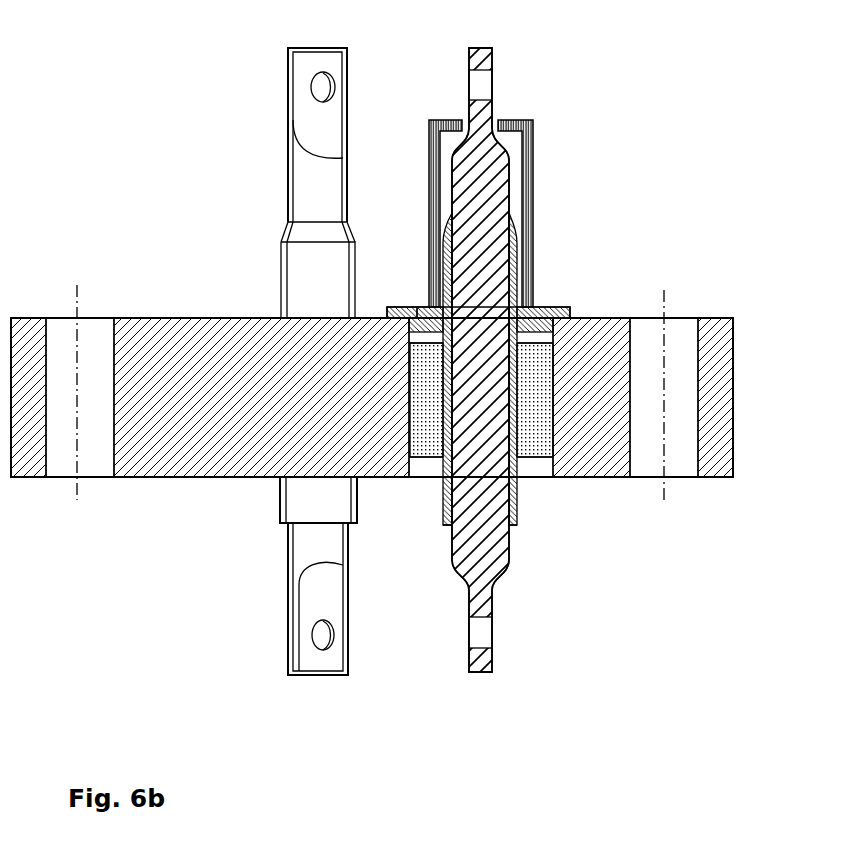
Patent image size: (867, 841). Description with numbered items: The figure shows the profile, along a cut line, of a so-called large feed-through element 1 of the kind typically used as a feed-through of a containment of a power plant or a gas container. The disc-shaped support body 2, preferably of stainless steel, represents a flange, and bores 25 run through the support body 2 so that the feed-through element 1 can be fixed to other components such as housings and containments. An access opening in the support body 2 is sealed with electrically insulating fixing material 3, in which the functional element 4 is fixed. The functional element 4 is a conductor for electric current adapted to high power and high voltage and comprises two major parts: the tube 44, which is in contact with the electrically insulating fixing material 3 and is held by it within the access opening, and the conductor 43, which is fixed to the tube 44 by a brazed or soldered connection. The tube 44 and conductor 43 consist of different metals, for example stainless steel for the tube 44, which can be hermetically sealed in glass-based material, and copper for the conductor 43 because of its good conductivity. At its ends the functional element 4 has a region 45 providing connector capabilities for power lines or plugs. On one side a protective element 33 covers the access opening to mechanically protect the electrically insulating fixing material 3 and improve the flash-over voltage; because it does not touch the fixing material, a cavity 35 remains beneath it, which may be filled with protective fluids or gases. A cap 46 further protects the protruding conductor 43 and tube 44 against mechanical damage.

The feed-through element 1 is at (157, 280).
The support body 2 is at (170, 475).
The electrically insulating fixing material 3 is at (432, 437).
The functional element 4 is at (282, 188).
The bores 25 is at (61, 470).
The protective element 33 is at (555, 307).
The cavity 35 is at (420, 305).
The conductor 43 is at (497, 215).
The tube 44 is at (517, 525).
The region 45 is at (318, 112).
The cap 46 is at (535, 128).